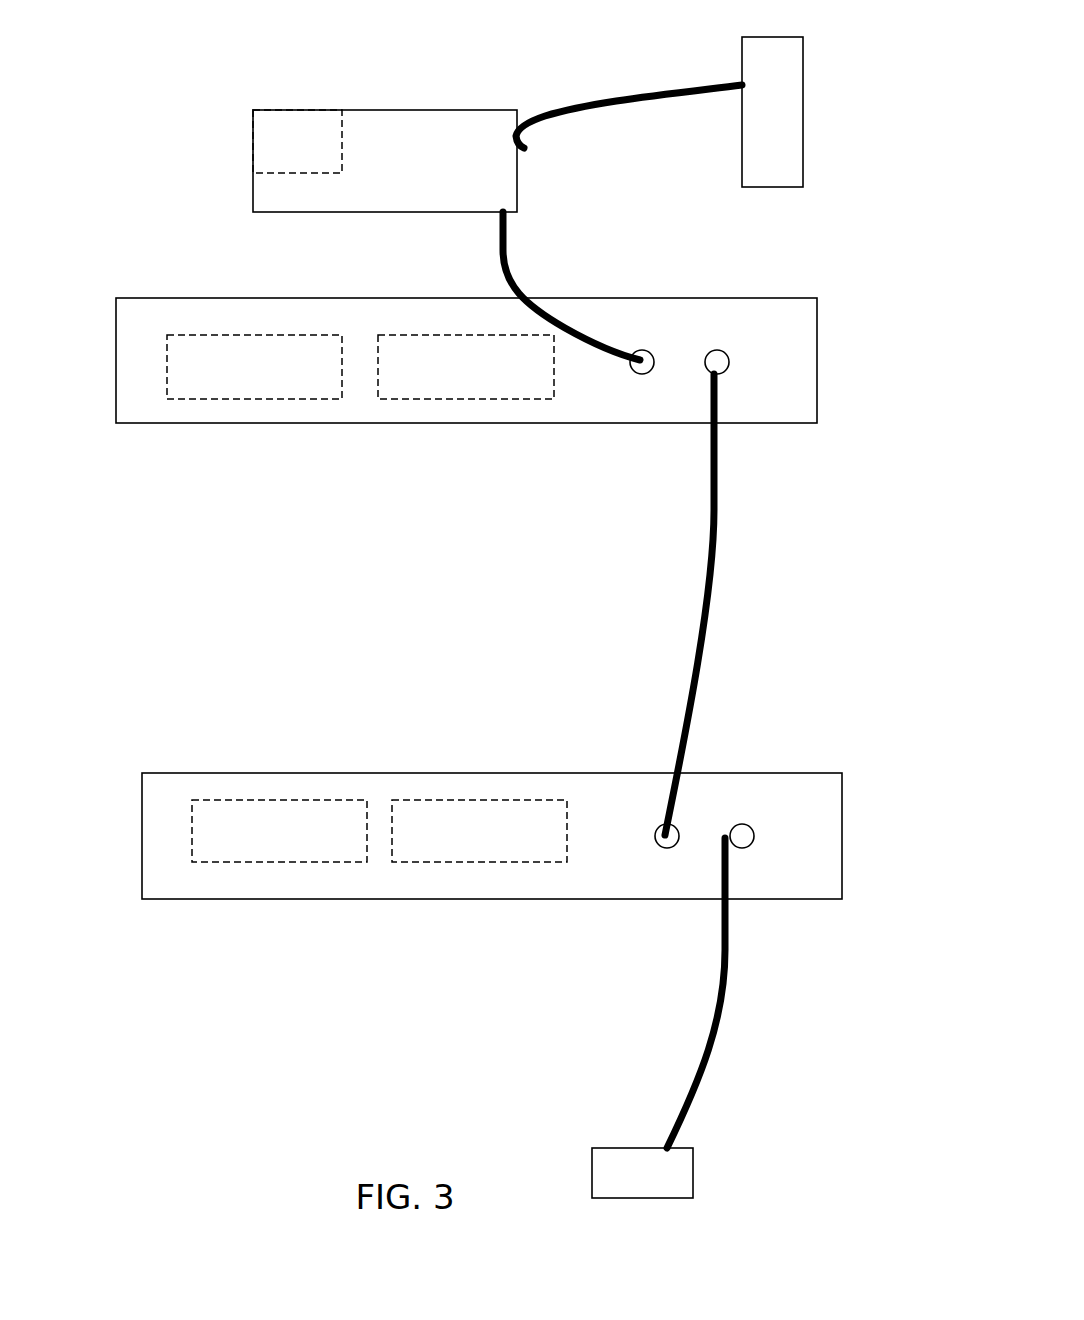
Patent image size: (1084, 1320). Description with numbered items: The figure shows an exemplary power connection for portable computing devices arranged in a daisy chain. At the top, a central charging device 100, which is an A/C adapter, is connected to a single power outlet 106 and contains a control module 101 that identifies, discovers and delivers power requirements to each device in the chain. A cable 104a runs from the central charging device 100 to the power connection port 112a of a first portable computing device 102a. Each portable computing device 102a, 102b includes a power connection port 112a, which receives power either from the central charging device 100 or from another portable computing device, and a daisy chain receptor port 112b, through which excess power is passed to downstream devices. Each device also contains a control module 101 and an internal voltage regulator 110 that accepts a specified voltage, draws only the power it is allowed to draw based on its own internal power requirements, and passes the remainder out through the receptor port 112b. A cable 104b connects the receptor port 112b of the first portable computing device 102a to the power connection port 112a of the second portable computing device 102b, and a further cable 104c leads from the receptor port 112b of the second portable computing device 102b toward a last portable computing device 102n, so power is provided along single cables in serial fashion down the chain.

The central charging device 100 is at (409, 177).
The control module 101 is at (410, 486).
The portable computing device 102a is at (168, 478).
The portable computing device 102b is at (195, 952).
The portable computing device 102n is at (642, 1173).
The cable 104a is at (571, 286).
The cable 104b is at (660, 604).
The cable 104c is at (725, 993).
The power outlet 106 is at (803, 123).
The internal voltage regulator 110 is at (267, 598).
The power connection port 112a is at (642, 387).
The daisy chain receptor port 112b is at (717, 452).